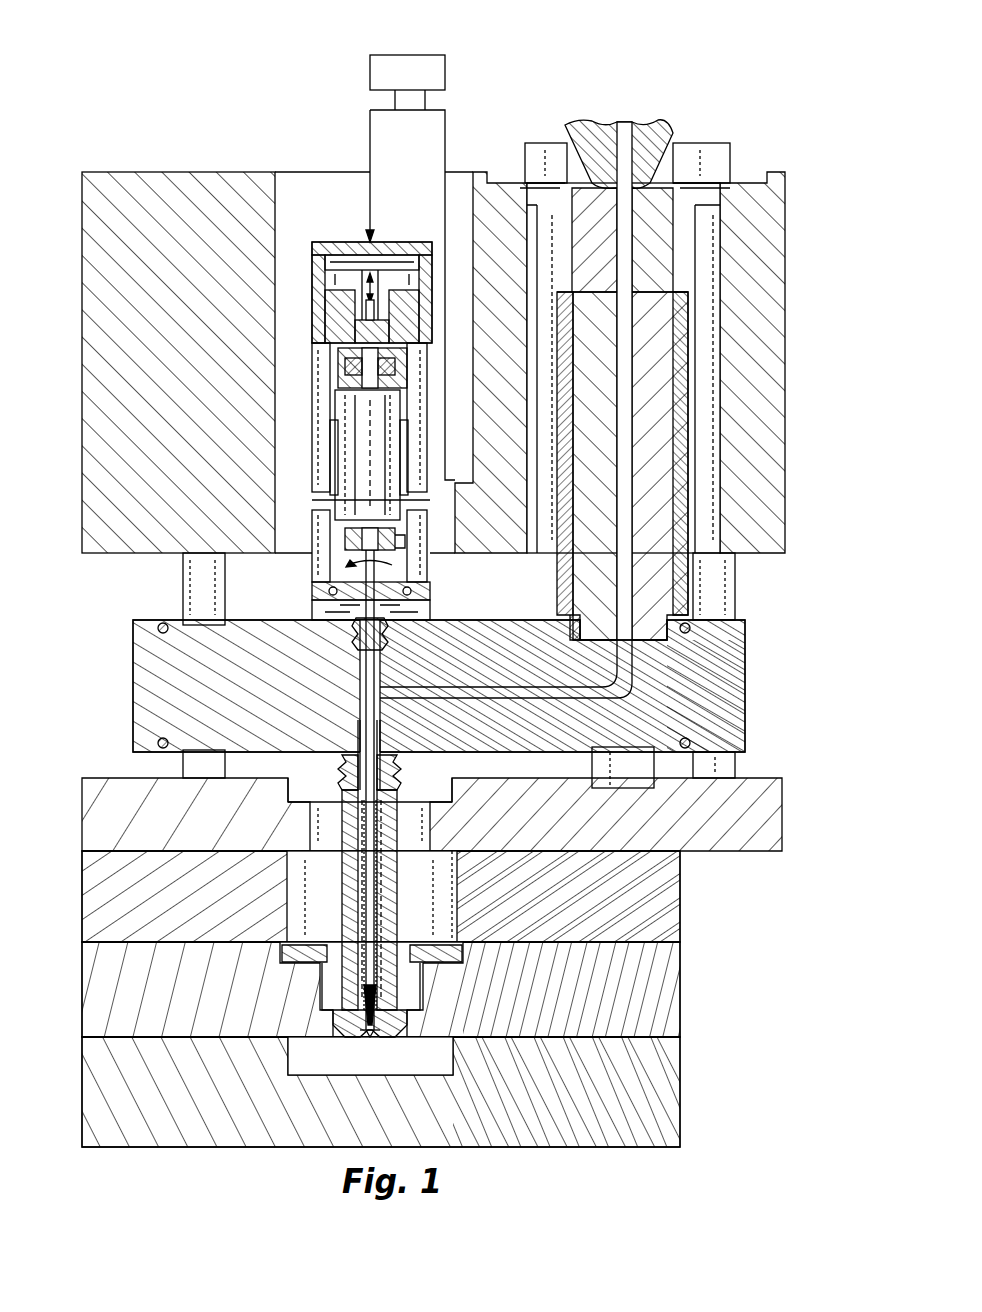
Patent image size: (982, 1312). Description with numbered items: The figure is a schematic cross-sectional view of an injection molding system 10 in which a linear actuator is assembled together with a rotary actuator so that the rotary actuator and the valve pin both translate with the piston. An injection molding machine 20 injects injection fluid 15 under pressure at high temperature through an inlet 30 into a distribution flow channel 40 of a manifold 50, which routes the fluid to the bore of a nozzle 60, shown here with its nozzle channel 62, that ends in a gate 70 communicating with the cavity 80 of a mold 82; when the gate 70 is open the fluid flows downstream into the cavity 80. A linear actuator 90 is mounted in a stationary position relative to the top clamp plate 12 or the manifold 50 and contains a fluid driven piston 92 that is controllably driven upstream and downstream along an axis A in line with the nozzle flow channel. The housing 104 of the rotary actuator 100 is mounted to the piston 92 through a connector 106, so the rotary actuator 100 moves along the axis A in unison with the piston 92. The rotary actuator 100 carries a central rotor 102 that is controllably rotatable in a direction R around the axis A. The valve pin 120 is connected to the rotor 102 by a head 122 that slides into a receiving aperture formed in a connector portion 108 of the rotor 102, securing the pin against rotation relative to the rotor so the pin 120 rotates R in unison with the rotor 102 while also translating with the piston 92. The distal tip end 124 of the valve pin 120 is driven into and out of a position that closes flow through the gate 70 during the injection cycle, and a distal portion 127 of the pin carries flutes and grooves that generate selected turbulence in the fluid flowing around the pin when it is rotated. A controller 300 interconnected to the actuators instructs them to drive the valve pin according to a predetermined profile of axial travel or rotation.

The injection molding system 10 is at (201, 44).
The top clamp plate 12 is at (108, 172).
The injection fluid 15 is at (620, 100).
The injection molding machine 20 is at (669, 121).
The inlet 30 is at (674, 246).
The distribution flow channel 40 is at (625, 660).
The manifold 50 is at (133, 628).
The nozzle 60 is at (385, 892).
The nozzle heater 62 is at (382, 910).
The gate 70 is at (372, 1043).
The cavity 80 is at (452, 1067).
The mold 82 is at (83, 1100).
The linear actuator 90 is at (311, 236).
The piston 92 is at (372, 252).
The rotary actuator 100 is at (333, 506).
The rotor 102 is at (352, 420).
The housing 104 is at (412, 440).
The connector 106 is at (360, 340).
The connector portion 108 is at (347, 548).
The valve pin 120 is at (355, 752).
The head 122 is at (408, 556).
The distal tip end 124 is at (366, 1035).
The distal portion 127 is at (364, 995).
The controller 300 is at (436, 84).
The axis A is at (380, 772).
The rotation R is at (400, 568).